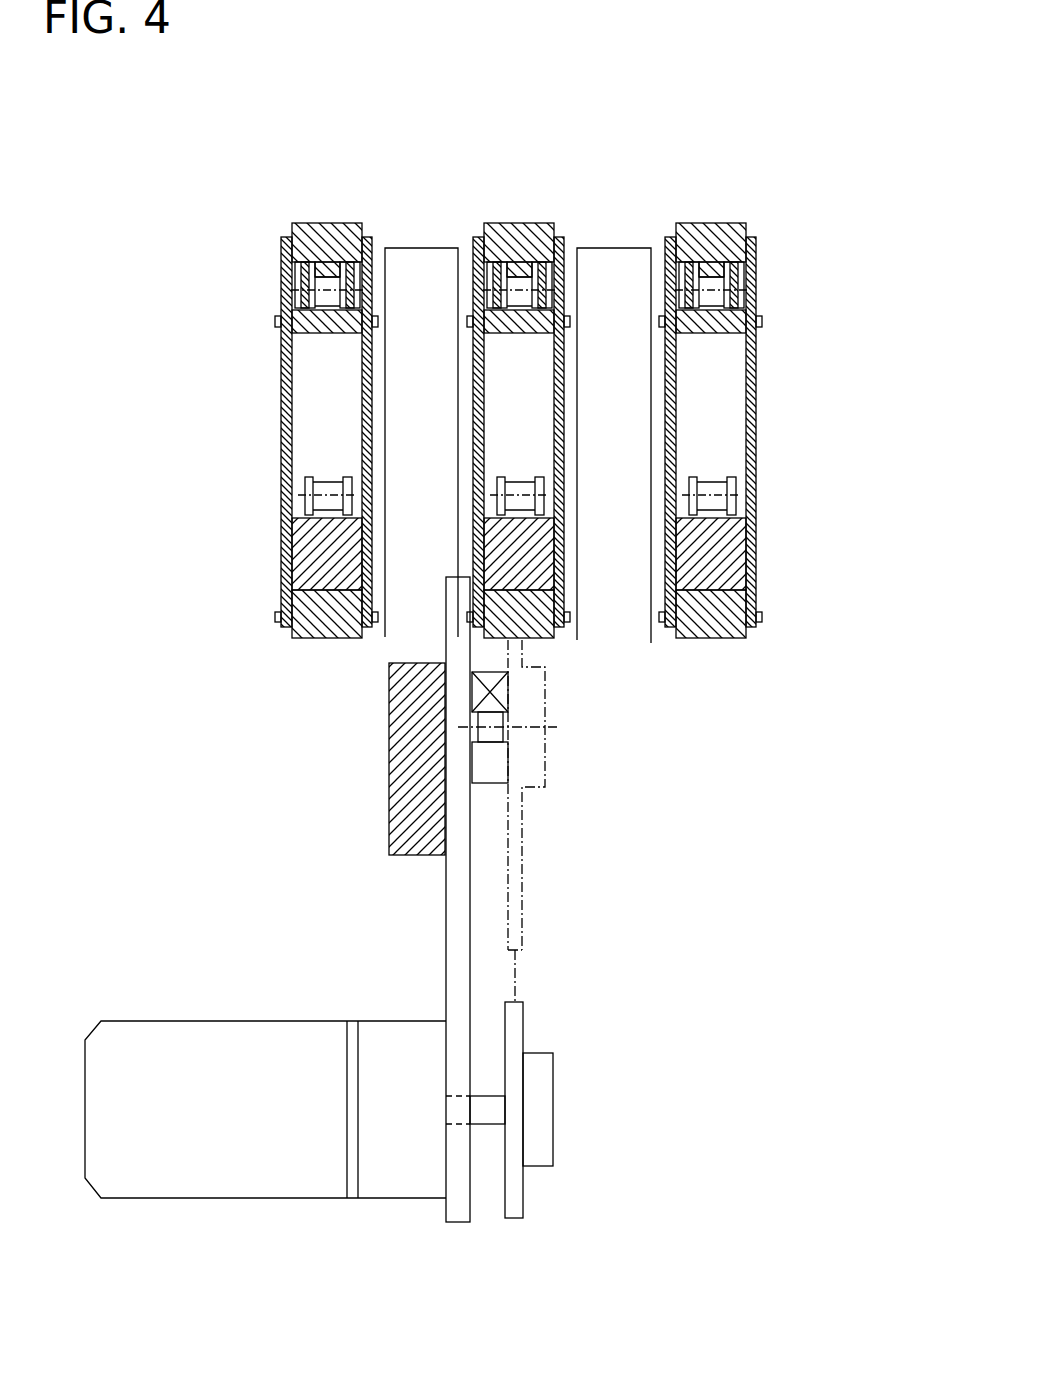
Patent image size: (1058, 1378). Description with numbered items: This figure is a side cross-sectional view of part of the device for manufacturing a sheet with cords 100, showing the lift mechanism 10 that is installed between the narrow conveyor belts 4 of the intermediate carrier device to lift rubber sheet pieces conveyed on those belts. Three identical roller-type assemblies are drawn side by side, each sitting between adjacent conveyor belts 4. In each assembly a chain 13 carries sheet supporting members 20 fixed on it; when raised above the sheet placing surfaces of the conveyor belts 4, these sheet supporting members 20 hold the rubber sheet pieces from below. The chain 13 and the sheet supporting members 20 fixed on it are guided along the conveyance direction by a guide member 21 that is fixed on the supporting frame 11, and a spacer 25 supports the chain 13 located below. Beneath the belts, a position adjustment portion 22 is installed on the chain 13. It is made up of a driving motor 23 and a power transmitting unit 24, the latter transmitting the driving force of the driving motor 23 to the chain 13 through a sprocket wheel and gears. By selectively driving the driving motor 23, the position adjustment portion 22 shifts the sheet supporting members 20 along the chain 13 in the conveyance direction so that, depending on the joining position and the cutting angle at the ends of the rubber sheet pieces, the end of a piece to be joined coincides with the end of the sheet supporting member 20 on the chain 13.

The device for manufacturing a sheet with cords 100 is at (876, 205).
The lift mechanism 10 is at (283, 421).
The chain 13 is at (287, 268).
The sheet supporting members 20 is at (354, 262).
The spacer 25 is at (283, 561).
The guide member 21 is at (283, 628).
The conveyor belts 4 is at (405, 248).
The supporting frame 11 is at (402, 778).
The position adjustment portion 22 is at (692, 748).
The driving motor 23 is at (197, 1040).
The power transmitting unit 24 is at (568, 960).